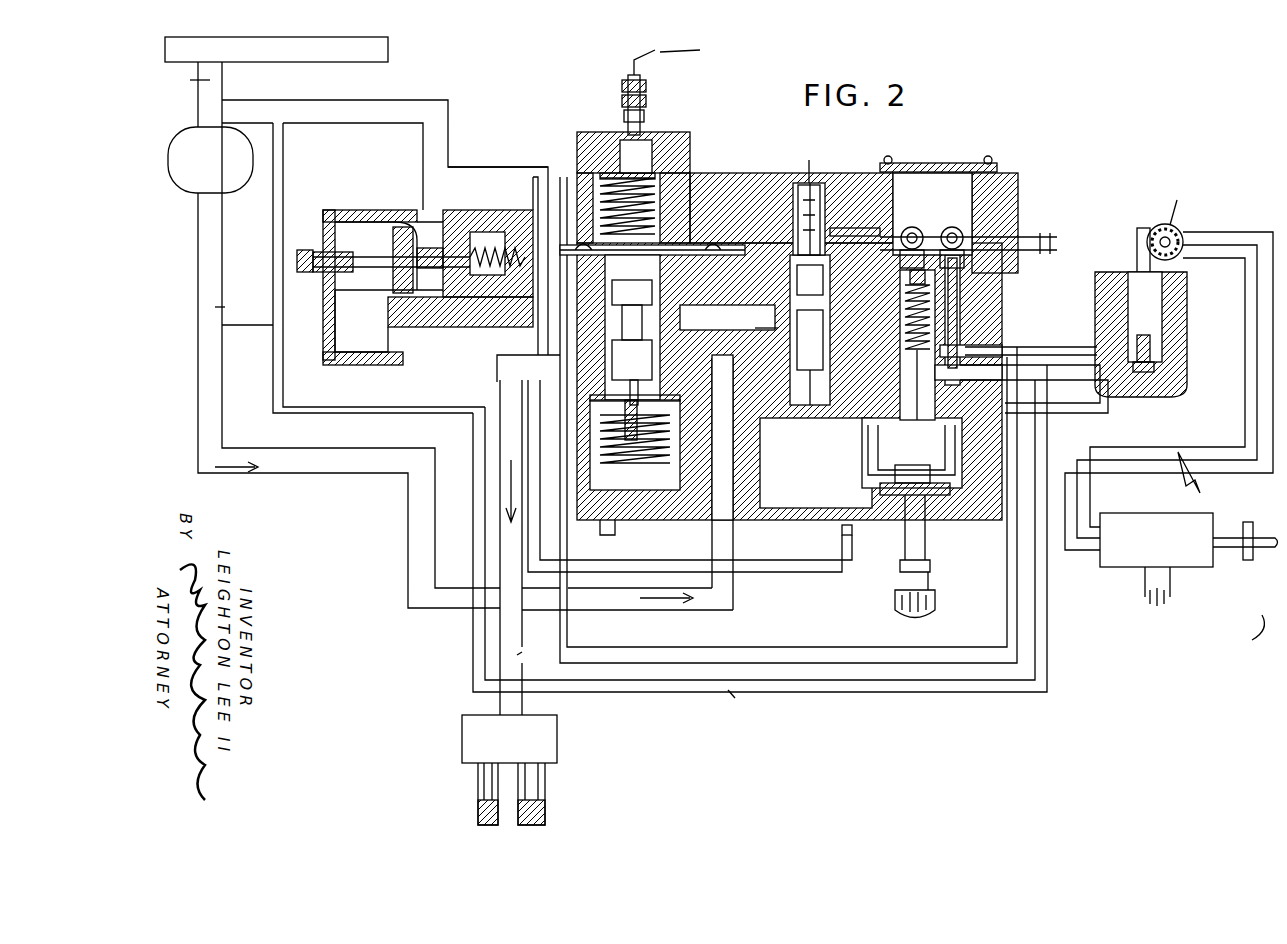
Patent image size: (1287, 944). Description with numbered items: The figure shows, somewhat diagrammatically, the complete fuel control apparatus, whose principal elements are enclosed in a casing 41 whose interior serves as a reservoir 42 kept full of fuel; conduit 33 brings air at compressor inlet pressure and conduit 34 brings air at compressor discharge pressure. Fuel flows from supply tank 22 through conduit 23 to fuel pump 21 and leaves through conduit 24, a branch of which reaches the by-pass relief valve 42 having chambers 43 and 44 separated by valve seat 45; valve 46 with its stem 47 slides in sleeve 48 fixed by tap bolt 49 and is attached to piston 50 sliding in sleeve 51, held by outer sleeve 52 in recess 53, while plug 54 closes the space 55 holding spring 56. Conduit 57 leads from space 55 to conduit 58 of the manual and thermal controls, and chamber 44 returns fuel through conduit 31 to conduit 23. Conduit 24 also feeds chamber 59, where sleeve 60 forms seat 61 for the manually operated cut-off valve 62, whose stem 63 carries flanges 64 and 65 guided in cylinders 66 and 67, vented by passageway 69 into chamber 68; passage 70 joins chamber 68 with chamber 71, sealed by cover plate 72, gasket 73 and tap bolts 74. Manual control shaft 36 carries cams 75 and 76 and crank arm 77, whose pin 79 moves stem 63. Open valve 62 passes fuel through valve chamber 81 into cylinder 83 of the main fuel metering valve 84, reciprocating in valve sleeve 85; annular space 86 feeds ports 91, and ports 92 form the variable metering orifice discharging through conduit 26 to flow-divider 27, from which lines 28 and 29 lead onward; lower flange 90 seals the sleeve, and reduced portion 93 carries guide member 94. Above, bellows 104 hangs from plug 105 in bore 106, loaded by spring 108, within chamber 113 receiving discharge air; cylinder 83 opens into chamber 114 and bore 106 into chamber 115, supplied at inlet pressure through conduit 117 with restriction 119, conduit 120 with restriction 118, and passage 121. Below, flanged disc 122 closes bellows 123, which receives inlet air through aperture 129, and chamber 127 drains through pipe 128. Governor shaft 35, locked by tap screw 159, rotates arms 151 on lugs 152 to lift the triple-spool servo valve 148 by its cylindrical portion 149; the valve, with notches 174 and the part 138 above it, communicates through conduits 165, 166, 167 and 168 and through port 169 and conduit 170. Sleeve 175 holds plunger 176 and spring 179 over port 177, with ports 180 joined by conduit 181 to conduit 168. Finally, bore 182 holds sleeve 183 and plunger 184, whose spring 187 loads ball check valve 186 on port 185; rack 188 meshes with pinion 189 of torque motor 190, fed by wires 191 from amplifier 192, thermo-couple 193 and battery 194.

The fuel pump 21 is at (200, 193).
The fuel supply line 22 is at (298, 60).
The pump inlet conduit 23 is at (207, 110).
The fuel conduit 24 is at (197, 247).
The metered fuel conduit 26 is at (517, 628).
The flow divider 27 is at (462, 728).
The primary fuel line 28 is at (543, 783).
The secondary fuel line 29 is at (480, 785).
The pressure conduit 31 is at (330, 118).
The fuel passage 33 is at (612, 540).
The pressure adjusting stem 34 is at (643, 72).
The adjusting shaft 35 is at (925, 560).
The housing section 36 is at (1020, 225).
The housing 41 is at (236, 362).
The pressure regulating valve 42 is at (426, 335).
The valve chamber 43 is at (361, 321).
The valve seat 44 is at (420, 230).
The cylinder 45 is at (390, 210).
The piston 46 is at (393, 245).
The valve stem 47 is at (372, 268).
The adjusting screw 48 is at (318, 290).
The end cap 49 is at (322, 250).
The passage 50 is at (428, 316).
The passage 51 is at (468, 315).
The sleeve 52 is at (475, 215).
The spring 53 is at (500, 230).
The spring retainer 54 is at (528, 230).
The port 55 is at (580, 325).
The port 56 is at (558, 309).
The servo pressure conduit 57 is at (473, 553).
The conduit 58 is at (1100, 400).
The chamber 59 is at (765, 418).
The passage 60 is at (808, 420).
The valve member 61 is at (810, 294).
The land 62 is at (905, 343).
The land 63 is at (903, 331).
The valve bore 64 is at (828, 282).
The valve stem 65 is at (812, 170).
The land 66 is at (903, 318).
The bore 67 is at (845, 180).
The lever 68 is at (855, 226).
The valve head 69 is at (812, 160).
The pivot eye 70 is at (912, 226).
The cover plate 71 is at (940, 165).
The gasket 72 is at (945, 163).
The boss 73 is at (1000, 170).
The screw 74 is at (893, 158).
The shaft 75 is at (1010, 256).
The pivot eye 76 is at (952, 226).
The lever arm 77 is at (914, 250).
The passage 79 is at (835, 270).
The port 81 is at (788, 309).
The passage 83 is at (548, 340).
The valve land 84 is at (632, 360).
The metering passage 85 is at (578, 368).
The passage 86 is at (727, 367).
The passage 90 is at (578, 395).
The port 91 is at (580, 346).
The valve land 92 is at (626, 384).
The valve neck 93 is at (632, 322).
The valve head 94 is at (632, 292).
The port 104 is at (563, 294).
The spring housing 105 is at (605, 132).
The bore 106 is at (700, 175).
The housing block 108 is at (690, 150).
The spring 113 is at (690, 125).
The diaphragm 114 is at (740, 255).
The chamber 115 is at (755, 175).
The conduit 117 is at (510, 170).
The restriction 118 is at (842, 538).
The conduit 119 is at (538, 178).
The conduit 120 is at (560, 178).
The chamber 121 is at (770, 185).
The housing wall 122 is at (580, 522).
The spring 123 is at (600, 448).
The spring seat 127 is at (605, 430).
The conduit 128 is at (283, 170).
The port 129 is at (605, 528).
The spring 138 is at (900, 306).
The cam 148 is at (890, 450).
The follower block 149 is at (913, 474).
The passage 151 is at (995, 430).
The lever 152 is at (870, 475).
The base plate 159 is at (880, 495).
The cup member 165 is at (870, 428).
The passage 166 is at (1000, 418).
The passage 167 is at (1050, 435).
The metered pressure conduit 168 is at (563, 470).
The passage 169 is at (990, 390).
The passage 170 is at (990, 405).
The spring seat 174 is at (900, 440).
The plunger 175 is at (965, 278).
The bore 176 is at (985, 300).
The servo conduit 177 is at (1036, 381).
The metered pressure conduit 179 is at (985, 330).
The port 180 is at (985, 340).
The conduit 181 is at (1040, 348).
The sleeve 182 is at (1160, 306).
The bore 183 is at (1165, 286).
The servo valve rod 184 is at (1137, 240).
The port 185 is at (1150, 375).
The valve land 186 is at (1155, 366).
The valve land 187 is at (1152, 343).
The link 188 is at (1137, 225).
The electrical lead 189 is at (1190, 240).
The torque motor 190 is at (1168, 235).
The electrical leads 191 is at (1206, 476).
The amplifier 192 is at (1156, 540).
The thermocouple 193 is at (1262, 552).
The thermocouple leads 194 is at (1158, 610).